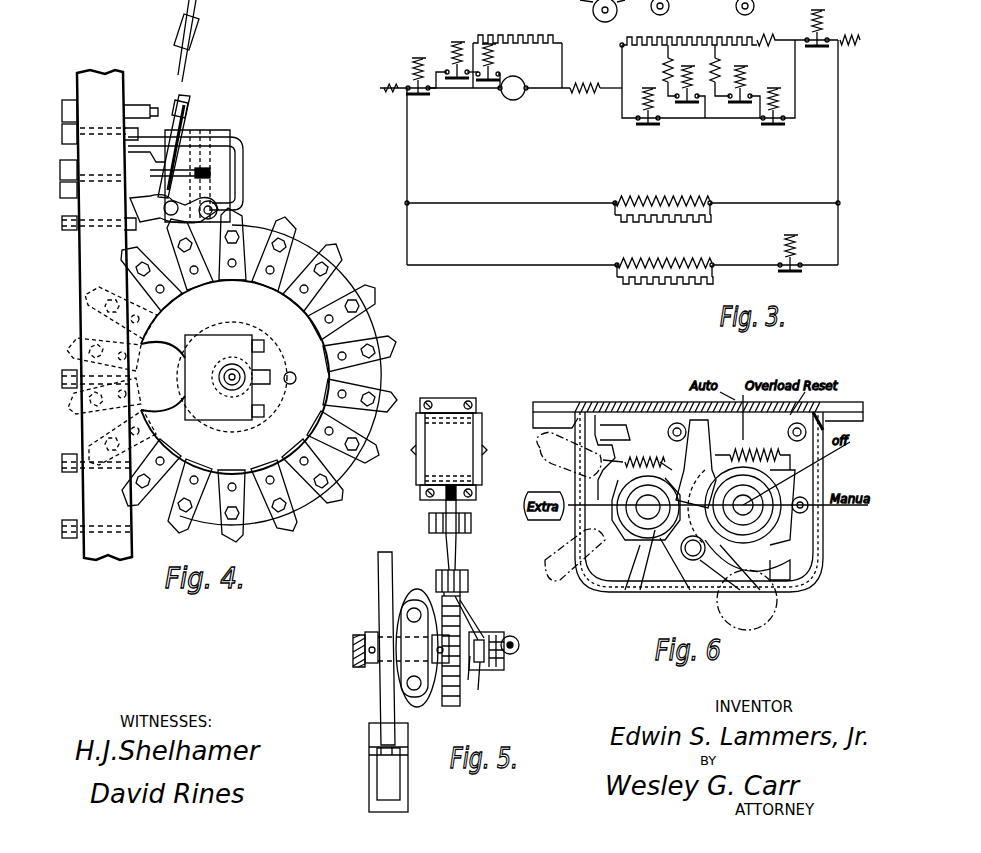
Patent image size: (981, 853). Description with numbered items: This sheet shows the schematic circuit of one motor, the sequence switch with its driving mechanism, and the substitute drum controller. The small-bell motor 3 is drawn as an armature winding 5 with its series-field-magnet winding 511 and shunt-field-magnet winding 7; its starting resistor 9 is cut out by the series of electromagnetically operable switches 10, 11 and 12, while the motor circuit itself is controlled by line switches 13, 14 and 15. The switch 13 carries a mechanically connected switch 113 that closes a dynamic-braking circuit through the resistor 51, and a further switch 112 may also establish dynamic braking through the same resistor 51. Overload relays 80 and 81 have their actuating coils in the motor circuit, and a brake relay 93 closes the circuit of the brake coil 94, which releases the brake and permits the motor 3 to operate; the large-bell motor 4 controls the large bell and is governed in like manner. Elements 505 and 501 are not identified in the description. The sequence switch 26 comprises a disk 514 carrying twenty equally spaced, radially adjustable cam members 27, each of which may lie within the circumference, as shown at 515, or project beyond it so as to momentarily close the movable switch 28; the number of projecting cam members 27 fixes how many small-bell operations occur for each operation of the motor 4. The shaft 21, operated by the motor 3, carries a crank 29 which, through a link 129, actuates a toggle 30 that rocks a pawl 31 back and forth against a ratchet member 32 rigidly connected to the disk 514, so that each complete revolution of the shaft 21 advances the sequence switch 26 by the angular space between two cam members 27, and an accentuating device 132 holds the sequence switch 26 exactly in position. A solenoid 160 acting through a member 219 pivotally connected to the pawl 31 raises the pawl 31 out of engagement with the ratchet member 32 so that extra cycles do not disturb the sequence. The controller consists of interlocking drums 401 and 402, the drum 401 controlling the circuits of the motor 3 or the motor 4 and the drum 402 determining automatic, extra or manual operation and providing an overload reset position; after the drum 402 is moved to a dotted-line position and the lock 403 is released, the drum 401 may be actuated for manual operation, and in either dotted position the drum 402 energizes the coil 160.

In FIG. 3, the overload relay 81 is at (395, 95).
In FIG. 3, the line switch 14 is at (420, 96).
In FIG. 3, the dynamic-braking switch 112 is at (458, 80).
In FIG. 3, the mechanically connected switch 113 is at (495, 70).
In FIG. 3, the armature winding 5 is at (513, 100).
In FIG. 3, the series-field-magnet winding 511 is at (580, 94).
In FIG. 3, the dynamic-braking resistor 51 is at (510, 35).
In FIG. 3, the pulley 505 is at (598, 14).
In FIG. 3, the large-bell motor 4 is at (680, 7).
In FIG. 3, the small-bell motor 3 is at (755, 8).
In FIG. 3, the starting resistor 9 is at (695, 35).
In FIG. 3, the electromagnetically operable switch 12 is at (650, 126).
In FIG. 3, the electromagnetically operable switch 11 is at (683, 104).
In FIG. 3, the electromagnetically operable switch 10 is at (738, 104).
In FIG. 3, the line switch 13 is at (775, 126).
In FIG. 3, the line switch 15 is at (820, 48).
In FIG. 3, the overload relay 80 is at (852, 46).
In FIG. 3, the shunt-field-magnet winding 7 is at (700, 196).
In FIG. 3, the brake coil 94 is at (700, 258).
In FIG. 3, the brake relay 93 is at (800, 272).
In FIG. 4, the cam member 27 is at (240, 222).
In FIG. 4, the disk 514 is at (300, 250).
In FIG. 5, the disk 514 is at (375, 625).
In FIG. 4, the retracted cam position 515 is at (372, 322).
In FIG. 4, the accentuating device 132 is at (250, 532).
In FIG. 4, the pawl 31 is at (235, 315).
In FIG. 5, the pawl 31 is at (462, 568).
In FIG. 4, the solenoid 160 is at (222, 150).
In FIG. 5, the solenoid 160 is at (465, 425).
In FIG. 4, the sequence switch 26 is at (203, 163).
In FIG. 4, the movable switch 28 is at (190, 98).
In FIG. 4, the handle 501 is at (195, 28).
In FIG. 5, the pawl-lifting member 219 is at (452, 545).
In FIG. 5, the ratchet member 32 is at (450, 706).
In FIG. 5, the toggle 30 is at (492, 632).
In FIG. 5, the shaft 21 is at (515, 638).
In FIG. 5, the crank 29 is at (500, 672).
In FIG. 5, the link 129 is at (479, 686).
In FIG. 6, the controller drum 401 is at (790, 585).
In FIG. 6, the controller drum 402 is at (625, 583).
In FIG. 6, the lock 403 is at (690, 565).